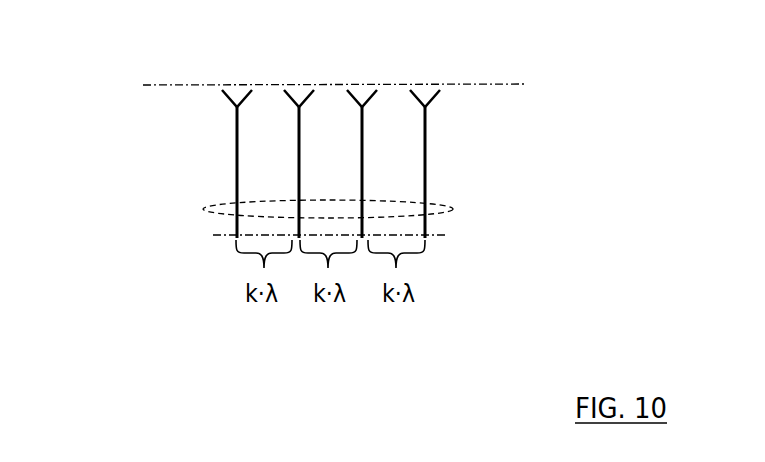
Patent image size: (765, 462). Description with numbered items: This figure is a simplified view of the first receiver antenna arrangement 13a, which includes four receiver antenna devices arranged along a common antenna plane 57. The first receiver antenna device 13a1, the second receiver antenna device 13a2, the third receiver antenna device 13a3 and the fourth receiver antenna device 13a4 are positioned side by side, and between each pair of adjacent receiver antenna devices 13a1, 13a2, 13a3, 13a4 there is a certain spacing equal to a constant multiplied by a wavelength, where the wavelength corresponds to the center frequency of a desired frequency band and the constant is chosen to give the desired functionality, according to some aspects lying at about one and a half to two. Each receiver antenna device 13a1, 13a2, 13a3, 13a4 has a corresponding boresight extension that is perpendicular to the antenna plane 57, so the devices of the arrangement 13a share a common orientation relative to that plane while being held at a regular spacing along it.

The antenna plane 57 is at (193, 85).
The first receiver antenna arrangement 13a is at (207, 205).
The first receiver antenna device 13a1 is at (237, 138).
The second receiver antenna device 13a2 is at (299, 130).
The third receiver antenna device 13a3 is at (363, 168).
The fourth receiver antenna device 13a4 is at (425, 185).